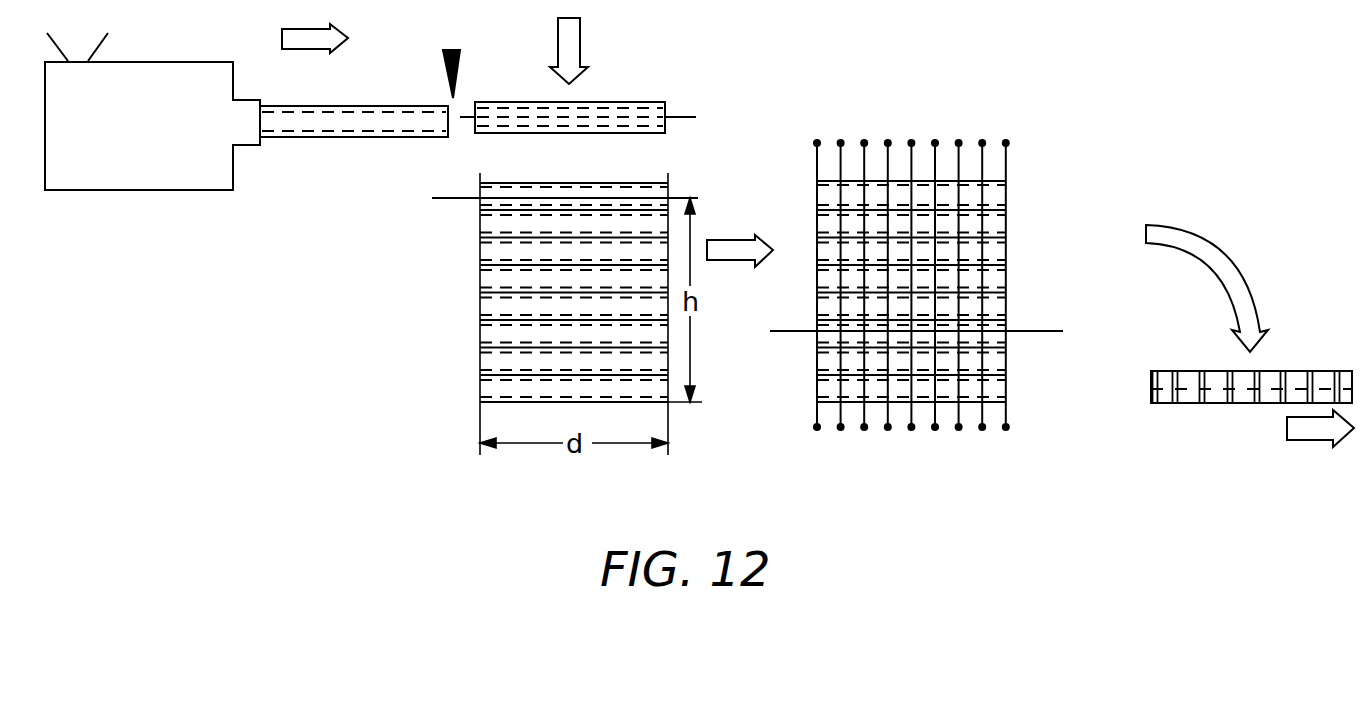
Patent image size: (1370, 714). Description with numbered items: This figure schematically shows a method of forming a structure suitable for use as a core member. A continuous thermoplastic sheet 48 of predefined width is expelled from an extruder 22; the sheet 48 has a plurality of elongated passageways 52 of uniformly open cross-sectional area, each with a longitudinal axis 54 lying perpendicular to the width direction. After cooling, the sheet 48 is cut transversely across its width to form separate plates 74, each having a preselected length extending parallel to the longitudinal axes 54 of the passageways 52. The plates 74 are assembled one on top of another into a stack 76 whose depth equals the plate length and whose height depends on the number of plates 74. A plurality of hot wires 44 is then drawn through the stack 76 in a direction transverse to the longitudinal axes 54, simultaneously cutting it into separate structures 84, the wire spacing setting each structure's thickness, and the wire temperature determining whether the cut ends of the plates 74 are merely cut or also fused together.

The extruder 22 is at (158, 138).
The thermoplastic sheet 48 is at (407, 117).
The elongated passageways 52 is at (290, 135).
The longitudinal axis 54 is at (683, 112).
The plates 74 is at (585, 105).
The stack 76 is at (458, 363).
The hot wires 44 is at (863, 143).
The structures 84 is at (1240, 407).